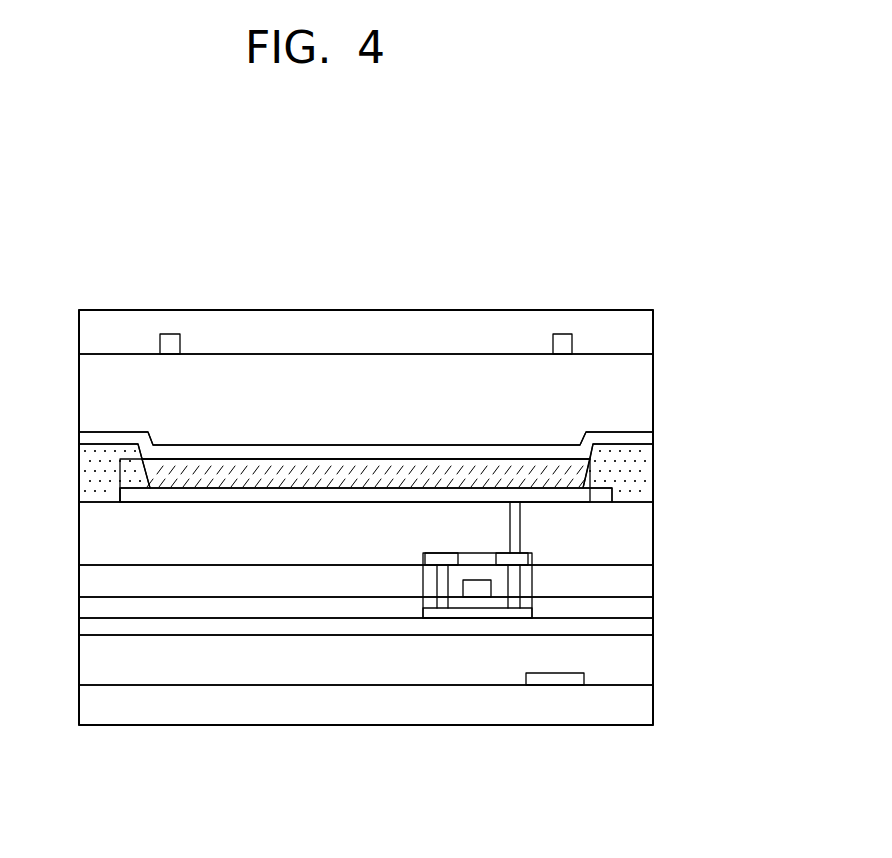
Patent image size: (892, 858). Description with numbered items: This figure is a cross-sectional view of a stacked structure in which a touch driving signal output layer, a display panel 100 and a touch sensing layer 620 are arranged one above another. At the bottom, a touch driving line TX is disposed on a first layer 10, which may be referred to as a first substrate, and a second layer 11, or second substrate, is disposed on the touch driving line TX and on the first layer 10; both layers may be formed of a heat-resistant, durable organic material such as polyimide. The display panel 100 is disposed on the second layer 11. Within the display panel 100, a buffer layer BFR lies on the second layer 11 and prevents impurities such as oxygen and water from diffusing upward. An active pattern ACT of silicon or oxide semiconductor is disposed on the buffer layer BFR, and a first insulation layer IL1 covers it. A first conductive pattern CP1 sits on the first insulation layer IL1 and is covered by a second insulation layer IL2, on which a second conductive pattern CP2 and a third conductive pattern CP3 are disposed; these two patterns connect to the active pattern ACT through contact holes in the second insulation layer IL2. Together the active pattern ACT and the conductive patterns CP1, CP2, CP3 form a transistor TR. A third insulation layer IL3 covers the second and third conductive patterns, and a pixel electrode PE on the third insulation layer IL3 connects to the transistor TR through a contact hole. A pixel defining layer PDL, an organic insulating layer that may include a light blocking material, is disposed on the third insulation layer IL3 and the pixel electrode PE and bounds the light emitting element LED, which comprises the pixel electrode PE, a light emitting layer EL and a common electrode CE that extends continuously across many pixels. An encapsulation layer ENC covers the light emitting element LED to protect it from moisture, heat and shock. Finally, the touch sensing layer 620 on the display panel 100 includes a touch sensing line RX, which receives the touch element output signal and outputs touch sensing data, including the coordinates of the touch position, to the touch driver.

The display panel 100 is at (67, 354).
The touch sensing layer 620 is at (647, 331).
The touch sensing line RX is at (171, 334).
The encapsulation layer ENC is at (647, 403).
The common electrode CE is at (307, 453).
The pixel defining layer PDL is at (647, 478).
The light emitting layer EL is at (263, 478).
The pixel electrode PE is at (217, 495).
The light emitting element LED is at (323, 777).
The third insulation layer IL3 is at (647, 533).
The second insulation layer IL2 is at (647, 577).
The first insulation layer IL1 is at (647, 605).
The buffer layer BFR is at (647, 627).
The second layer 11 is at (647, 652).
The first layer 10 is at (647, 705).
The touch driving line TX is at (584, 675).
The third conductive pattern CP3 is at (528, 556).
The first conductive pattern CP1 is at (480, 593).
The second conductive pattern CP2 is at (425, 556).
The active pattern ACT is at (453, 615).
The transistor TR is at (575, 777).